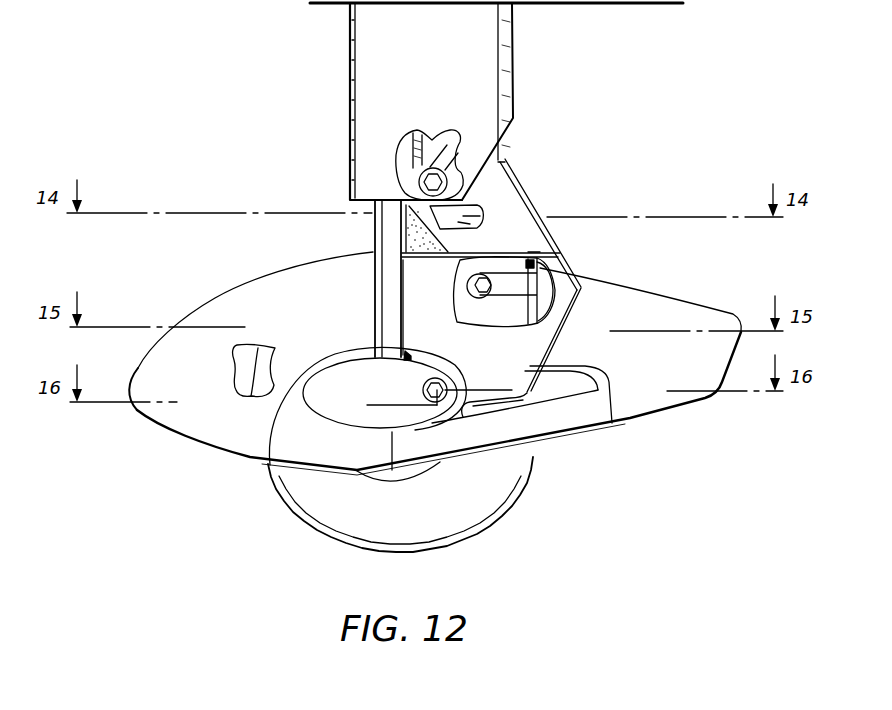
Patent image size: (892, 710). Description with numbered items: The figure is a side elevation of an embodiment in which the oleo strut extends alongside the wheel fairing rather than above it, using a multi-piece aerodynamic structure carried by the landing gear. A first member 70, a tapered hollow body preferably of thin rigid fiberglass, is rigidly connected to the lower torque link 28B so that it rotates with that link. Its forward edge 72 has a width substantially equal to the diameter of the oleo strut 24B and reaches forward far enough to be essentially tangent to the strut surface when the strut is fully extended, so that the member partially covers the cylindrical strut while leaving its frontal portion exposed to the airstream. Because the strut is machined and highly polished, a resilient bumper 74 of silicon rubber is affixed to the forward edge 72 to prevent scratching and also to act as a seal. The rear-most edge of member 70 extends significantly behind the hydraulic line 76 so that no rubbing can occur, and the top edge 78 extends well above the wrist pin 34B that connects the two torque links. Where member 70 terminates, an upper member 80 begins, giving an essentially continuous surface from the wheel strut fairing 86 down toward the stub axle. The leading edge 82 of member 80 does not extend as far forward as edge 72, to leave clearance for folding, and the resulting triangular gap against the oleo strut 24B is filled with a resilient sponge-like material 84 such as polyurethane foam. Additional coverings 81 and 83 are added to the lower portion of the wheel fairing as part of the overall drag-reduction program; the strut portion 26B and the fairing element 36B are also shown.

The wheel strut fairing 86 is at (470, 63).
The hydraulic line 76 is at (440, 132).
The leading edge 82 is at (432, 206).
The upper member 80 is at (480, 217).
The strut 26B is at (527, 201).
The resilient bumper 74 is at (395, 250).
The resilient sponge-like material 84 is at (427, 243).
The top edge 78 is at (531, 252).
The oleo strut 24B is at (380, 285).
The wrist pin 34B is at (473, 283).
The lower torque link 28B is at (480, 306).
The forward edge 72 is at (403, 323).
The first member 70 is at (552, 346).
The fin tail 36B is at (700, 303).
The covering 81 is at (330, 452).
The covering 83 is at (438, 439).